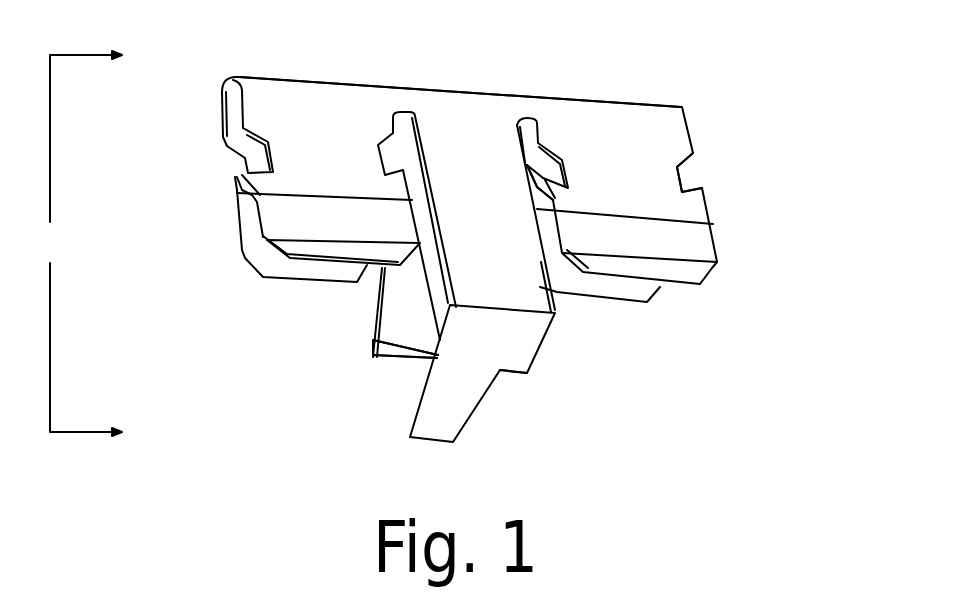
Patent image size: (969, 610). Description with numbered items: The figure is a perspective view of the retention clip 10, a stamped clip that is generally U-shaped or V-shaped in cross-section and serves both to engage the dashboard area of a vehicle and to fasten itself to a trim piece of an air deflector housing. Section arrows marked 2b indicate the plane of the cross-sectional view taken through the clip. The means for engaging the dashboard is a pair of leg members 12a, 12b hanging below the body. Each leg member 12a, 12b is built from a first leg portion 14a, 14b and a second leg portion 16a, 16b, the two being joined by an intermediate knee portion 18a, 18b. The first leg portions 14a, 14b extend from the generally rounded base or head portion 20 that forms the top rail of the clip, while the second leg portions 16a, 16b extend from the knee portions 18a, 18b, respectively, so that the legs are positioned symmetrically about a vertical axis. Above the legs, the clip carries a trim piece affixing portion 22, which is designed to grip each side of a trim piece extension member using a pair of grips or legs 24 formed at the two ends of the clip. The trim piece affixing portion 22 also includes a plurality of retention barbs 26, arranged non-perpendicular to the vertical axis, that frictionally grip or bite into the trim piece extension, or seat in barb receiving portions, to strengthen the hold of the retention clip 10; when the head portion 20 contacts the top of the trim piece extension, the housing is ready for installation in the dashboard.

The retention clip 10 is at (720, 90).
The head portion 20 is at (469, 89).
The trim piece affixing portion 22 is at (210, 195).
The grips or legs 24 is at (237, 228).
The retention barbs 26 is at (695, 197).
The first leg portion 14a is at (533, 277).
The first leg portion 14b is at (388, 312).
The leg member 12a is at (567, 378).
The leg member 12b is at (377, 373).
The second leg portion 16a is at (480, 373).
The second leg portion 16b is at (372, 350).
The intermediate knee portion 18a is at (552, 315).
The intermediate knee portion 18b is at (382, 347).
The section line 2b is at (79, 243).